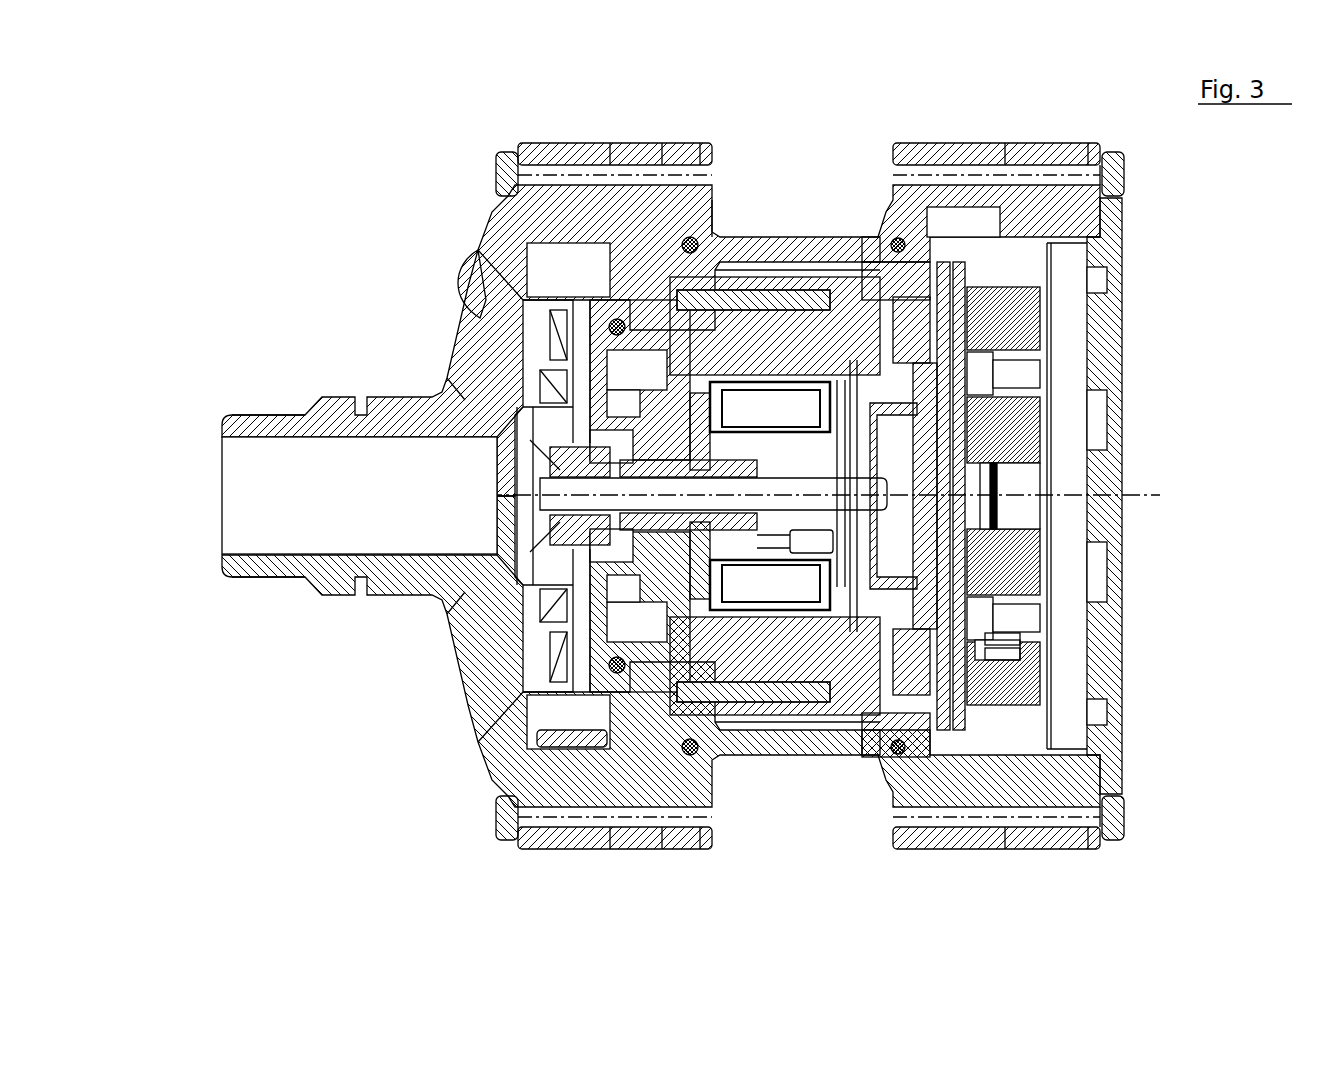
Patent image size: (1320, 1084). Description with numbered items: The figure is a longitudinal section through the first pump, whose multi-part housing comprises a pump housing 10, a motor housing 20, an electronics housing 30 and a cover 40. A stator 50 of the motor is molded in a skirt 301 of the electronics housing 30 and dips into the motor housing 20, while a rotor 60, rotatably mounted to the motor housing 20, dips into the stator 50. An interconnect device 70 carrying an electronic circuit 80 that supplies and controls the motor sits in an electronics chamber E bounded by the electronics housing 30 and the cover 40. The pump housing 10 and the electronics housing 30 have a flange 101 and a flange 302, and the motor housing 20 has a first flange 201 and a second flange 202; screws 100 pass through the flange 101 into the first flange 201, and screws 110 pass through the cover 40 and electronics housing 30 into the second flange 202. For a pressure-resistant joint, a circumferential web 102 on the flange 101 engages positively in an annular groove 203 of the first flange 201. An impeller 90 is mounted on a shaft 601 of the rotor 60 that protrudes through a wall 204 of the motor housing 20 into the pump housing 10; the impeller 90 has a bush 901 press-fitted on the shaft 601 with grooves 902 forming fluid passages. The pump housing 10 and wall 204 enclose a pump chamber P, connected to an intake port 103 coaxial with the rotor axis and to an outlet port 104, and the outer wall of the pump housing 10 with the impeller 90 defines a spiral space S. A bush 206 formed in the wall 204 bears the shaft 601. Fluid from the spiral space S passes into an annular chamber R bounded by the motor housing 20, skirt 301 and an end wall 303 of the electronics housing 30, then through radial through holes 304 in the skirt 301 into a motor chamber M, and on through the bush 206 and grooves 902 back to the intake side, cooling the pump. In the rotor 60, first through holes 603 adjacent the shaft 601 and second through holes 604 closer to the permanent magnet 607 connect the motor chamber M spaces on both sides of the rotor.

The pump housing 10 is at (475, 355).
The motor housing 20 is at (712, 195).
The electronics housing 30 is at (1035, 150).
The cover 40 is at (1100, 152).
The stator 50 is at (788, 288).
The rotor 60 is at (1000, 482).
The interconnect device 70 is at (1085, 240).
The electronic circuit 80 is at (1053, 272).
The impeller 90 is at (552, 612).
The screws 100 is at (500, 152).
The flange 101 is at (555, 143).
The circumferential web 102 is at (640, 180).
The intake port 103 is at (232, 560).
The outlet port 104 is at (482, 248).
The screws 110 is at (1125, 160).
The first flange 201 is at (712, 190).
The second flange 202 is at (935, 150).
The annular groove 203 is at (668, 165).
The wall 204 is at (520, 295).
The bush 206 is at (545, 640).
The skirt 301 is at (862, 285).
The flange 302 is at (1045, 848).
The end wall 303 is at (975, 595).
The radial through holes 304 is at (983, 573).
The shaft 601 is at (470, 610).
The first through holes 603 is at (990, 438).
The second through holes 604 is at (987, 547).
The permanent magnet 607 is at (765, 288).
The bush 901 is at (505, 577).
The grooves 902 is at (520, 440).
The annular chamber R is at (718, 268).
The motor chamber M is at (1000, 340).
The pump chamber P is at (543, 707).
The spiral space S is at (560, 690).
The electronics chamber E is at (1020, 665).